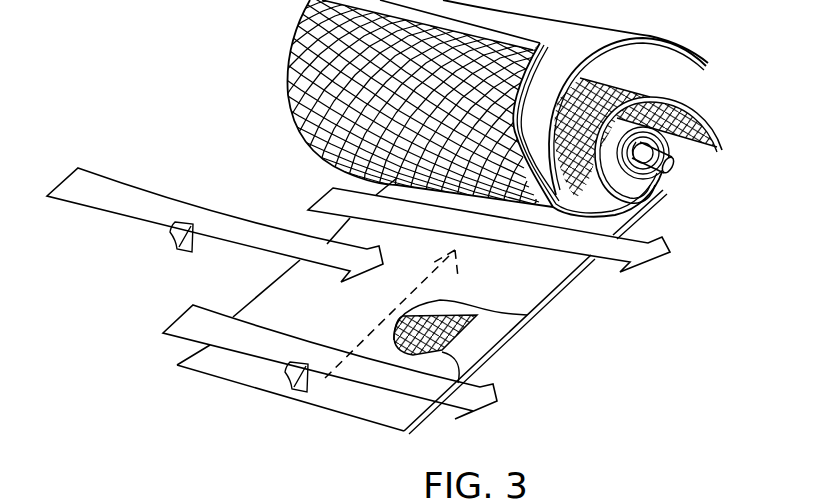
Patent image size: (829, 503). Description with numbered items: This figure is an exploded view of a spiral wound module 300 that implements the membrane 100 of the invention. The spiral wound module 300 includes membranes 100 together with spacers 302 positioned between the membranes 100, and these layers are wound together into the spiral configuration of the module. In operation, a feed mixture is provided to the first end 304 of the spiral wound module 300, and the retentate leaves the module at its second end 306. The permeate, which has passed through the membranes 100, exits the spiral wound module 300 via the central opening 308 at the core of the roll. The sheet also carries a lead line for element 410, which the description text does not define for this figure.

The flexible sheet 100 is at (355, 312).
The rolled sheet assembly 300 is at (267, 84).
The mesh region 302 is at (390, 53).
The rolling direction arrow 304 is at (270, 241).
The sheet side edge 306 is at (523, 340).
The core axle 308 is at (677, 167).
The reference element 410 is at (358, 502).